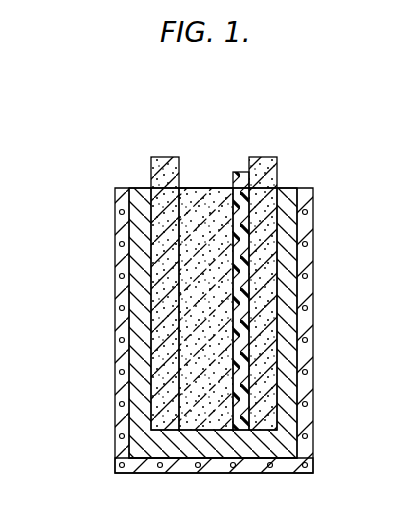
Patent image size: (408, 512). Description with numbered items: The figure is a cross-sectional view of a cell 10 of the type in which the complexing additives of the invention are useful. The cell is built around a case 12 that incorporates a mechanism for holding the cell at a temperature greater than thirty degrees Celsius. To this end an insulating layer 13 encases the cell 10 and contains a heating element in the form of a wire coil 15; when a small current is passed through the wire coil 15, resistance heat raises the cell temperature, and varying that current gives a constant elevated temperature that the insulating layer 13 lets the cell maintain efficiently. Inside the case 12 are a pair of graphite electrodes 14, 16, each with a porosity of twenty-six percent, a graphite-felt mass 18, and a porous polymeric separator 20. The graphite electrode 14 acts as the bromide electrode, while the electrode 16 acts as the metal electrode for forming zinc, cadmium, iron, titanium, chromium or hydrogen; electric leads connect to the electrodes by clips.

The cell 10 is at (78, 294).
The case 12 is at (140, 232).
The insulating layer 13 is at (306, 260).
The graphite electrode 14 is at (165, 157).
The wire coil 15 is at (305, 468).
The graphite electrode 16 is at (268, 158).
The graphite-felt mass 18 is at (200, 188).
The porous polymeric separator 20 is at (238, 172).